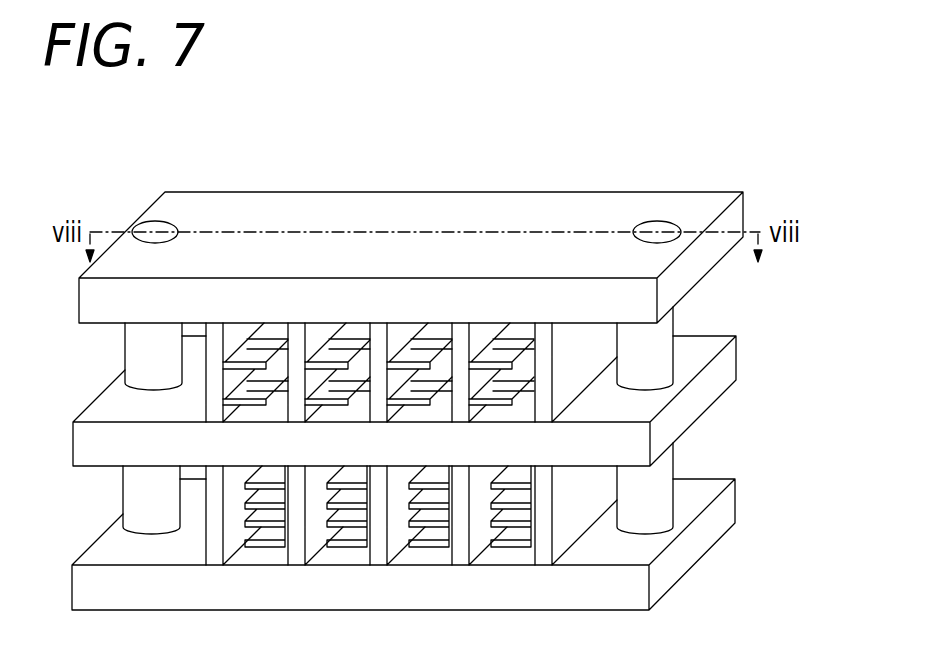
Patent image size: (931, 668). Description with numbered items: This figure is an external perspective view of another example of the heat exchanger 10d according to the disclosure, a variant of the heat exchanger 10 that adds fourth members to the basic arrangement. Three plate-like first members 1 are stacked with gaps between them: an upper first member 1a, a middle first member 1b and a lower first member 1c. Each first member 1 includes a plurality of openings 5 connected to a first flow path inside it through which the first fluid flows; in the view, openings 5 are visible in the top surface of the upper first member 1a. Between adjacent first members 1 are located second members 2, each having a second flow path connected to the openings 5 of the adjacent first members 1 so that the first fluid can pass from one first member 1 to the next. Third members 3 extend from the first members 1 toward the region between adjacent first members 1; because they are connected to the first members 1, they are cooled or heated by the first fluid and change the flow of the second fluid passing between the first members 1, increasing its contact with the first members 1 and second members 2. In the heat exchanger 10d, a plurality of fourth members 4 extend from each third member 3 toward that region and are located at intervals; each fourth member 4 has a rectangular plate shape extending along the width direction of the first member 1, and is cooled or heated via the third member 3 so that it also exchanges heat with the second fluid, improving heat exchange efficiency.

The heat exchanger 10d is at (194, 161).
The heat exchanger 10 is at (459, 366).
The first member 1 is at (472, 360).
The upper first member 1a is at (398, 212).
The middle first member 1b is at (690, 410).
The lower first member 1c is at (695, 545).
The second member 2 is at (147, 338).
The third member 3 is at (458, 550).
The fourth member 4 is at (333, 532).
The opening 5 is at (163, 228).